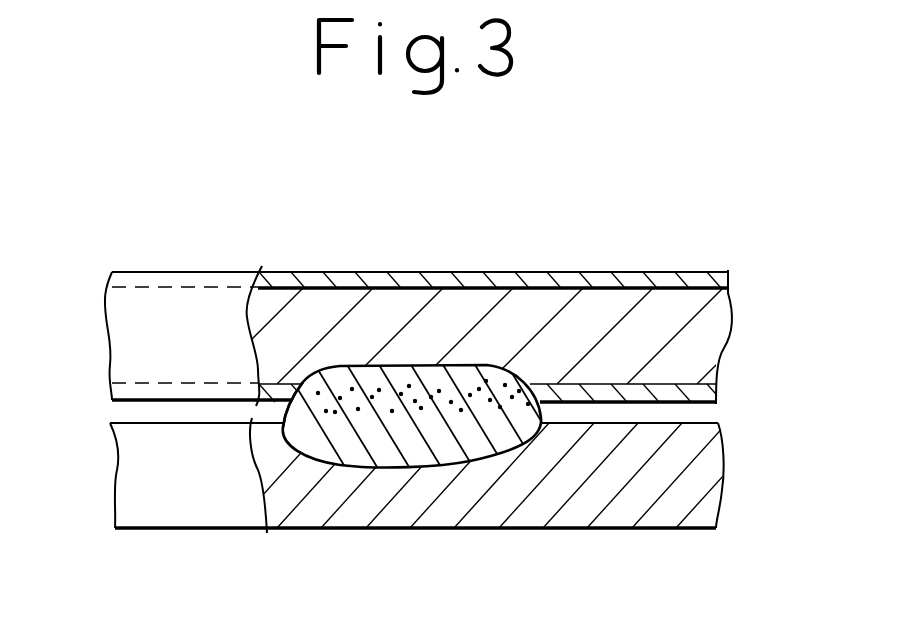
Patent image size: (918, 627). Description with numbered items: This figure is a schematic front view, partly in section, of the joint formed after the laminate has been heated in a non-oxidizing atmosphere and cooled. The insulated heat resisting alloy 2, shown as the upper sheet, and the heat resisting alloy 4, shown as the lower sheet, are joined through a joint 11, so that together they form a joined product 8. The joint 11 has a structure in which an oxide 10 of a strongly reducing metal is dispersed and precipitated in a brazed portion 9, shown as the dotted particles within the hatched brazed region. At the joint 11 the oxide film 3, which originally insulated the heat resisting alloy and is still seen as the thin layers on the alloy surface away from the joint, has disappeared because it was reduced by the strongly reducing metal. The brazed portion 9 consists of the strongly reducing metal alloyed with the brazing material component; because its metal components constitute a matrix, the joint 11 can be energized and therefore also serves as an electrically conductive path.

The insulated heat resisting alloy 2 is at (432, 320).
The oxide film 3 is at (207, 278).
The heat resisting alloy 4 is at (615, 512).
The joined product 8 is at (655, 252).
The brazed portion 9 is at (440, 450).
The oxide of a strongly reducing metal 10 is at (493, 368).
The joint 11 is at (370, 482).